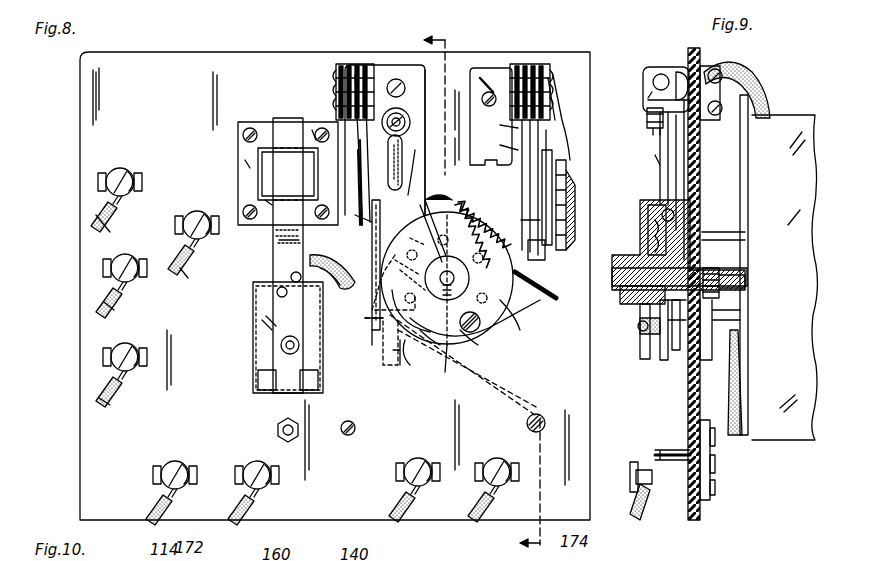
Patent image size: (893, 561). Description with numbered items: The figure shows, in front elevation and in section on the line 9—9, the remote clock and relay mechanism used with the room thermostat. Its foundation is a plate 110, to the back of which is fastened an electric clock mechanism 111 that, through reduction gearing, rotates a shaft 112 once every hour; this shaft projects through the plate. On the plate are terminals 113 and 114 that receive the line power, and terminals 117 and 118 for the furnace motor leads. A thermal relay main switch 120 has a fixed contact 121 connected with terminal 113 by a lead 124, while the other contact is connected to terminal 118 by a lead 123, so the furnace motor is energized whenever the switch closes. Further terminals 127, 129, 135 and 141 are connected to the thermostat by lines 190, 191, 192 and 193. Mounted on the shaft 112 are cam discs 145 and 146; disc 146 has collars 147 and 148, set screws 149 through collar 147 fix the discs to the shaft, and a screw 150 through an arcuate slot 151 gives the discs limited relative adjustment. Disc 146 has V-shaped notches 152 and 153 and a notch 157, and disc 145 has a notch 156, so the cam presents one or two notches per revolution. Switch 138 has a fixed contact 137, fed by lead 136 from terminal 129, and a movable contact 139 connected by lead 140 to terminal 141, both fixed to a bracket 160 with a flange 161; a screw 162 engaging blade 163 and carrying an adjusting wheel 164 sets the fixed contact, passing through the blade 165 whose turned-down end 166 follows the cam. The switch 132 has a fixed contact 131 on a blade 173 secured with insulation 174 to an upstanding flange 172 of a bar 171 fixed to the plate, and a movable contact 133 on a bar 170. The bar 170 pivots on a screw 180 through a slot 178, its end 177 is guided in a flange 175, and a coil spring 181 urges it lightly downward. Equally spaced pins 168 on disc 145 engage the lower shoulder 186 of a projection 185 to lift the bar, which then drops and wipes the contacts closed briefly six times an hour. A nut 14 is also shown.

In FIG. 8, the section line 9— 9 is at (482, 291).
In FIG. 8, the hex nut 14 is at (316, 430).
In FIG. 8, the plate 110 is at (92, 143).
In FIG. 9, the plate 110 is at (705, 518).
In FIG. 9, the electric clock mechanism 111 is at (784, 430).
In FIG. 8, the shaft 112 is at (522, 310).
In FIG. 9, the shaft 112 is at (606, 268).
In FIG. 8, the terminal 113 is at (175, 460).
In FIG. 8, the terminal 114 is at (250, 460).
In FIG. 8, the terminal 117 is at (418, 457).
In FIG. 8, the terminal 118 is at (494, 457).
In FIG. 9, the terminal 118 is at (640, 478).
In FIG. 8, the main switch 120 is at (284, 118).
In FIG. 8, the fixed contact 121 is at (280, 345).
In FIG. 8, the lead 123 is at (375, 230).
In FIG. 9, the lead 123 is at (755, 384).
In FIG. 8, the lead 124 is at (352, 300).
In FIG. 8, the terminal 127 is at (104, 274).
In FIG. 8, the terminal 129 is at (197, 210).
In FIG. 8, the fixed contact 131 is at (325, 185).
In FIG. 8, the switch 132 is at (363, 60).
In FIG. 8, the movable contact 133 is at (358, 262).
In FIG. 8, the terminal 135 is at (104, 363).
In FIG. 9, the lead 136 is at (766, 100).
In FIG. 8, the fixed contact 137 is at (552, 258).
In FIG. 8, the switch 138 is at (531, 62).
In FIG. 8, the movable contact 139 is at (561, 248).
In FIG. 8, the lead 140 is at (552, 62).
In FIG. 9, the lead 140 is at (730, 72).
In FIG. 8, the terminal 141 is at (102, 184).
In FIG. 8, the cam disc 145 is at (430, 232).
In FIG. 9, the cam disc 145 is at (662, 360).
In FIG. 8, the cam disc 146 is at (428, 342).
In FIG. 9, the cam disc 146 is at (638, 200).
In FIG. 8, the collar 147 is at (450, 372).
In FIG. 9, the collar 147 is at (628, 255).
In FIG. 9, the collar 148 is at (720, 310).
In FIG. 8, the set screws 149 is at (470, 342).
In FIG. 9, the set screws 149 is at (638, 320).
In FIG. 8, the screw 150 is at (480, 330).
In FIG. 9, the screw 150 is at (638, 330).
In FIG. 8, the arcuate slot 151 is at (412, 358).
In FIG. 9, the arcuate slot 151 is at (640, 352).
In FIG. 8, the V-shaped notch 152 is at (390, 292).
In FIG. 8, the V-shaped notch 153 is at (522, 322).
In FIG. 8, the notch 156 is at (520, 385).
In FIG. 8, the notch 157 is at (498, 145).
In FIG. 8, the bracket 160 is at (485, 65).
In FIG. 9, the flange 161 is at (632, 111).
In FIG. 8, the screw 162 is at (556, 165).
In FIG. 8, the blade 163 is at (498, 120).
In FIG. 9, the adjusting wheel 164 is at (646, 122).
In FIG. 8, the blade 165 is at (530, 160).
In FIG. 8, the turned-down end 166 is at (458, 262).
In FIG. 8, the pins 168 is at (388, 335).
In FIG. 9, the pins 168 is at (705, 245).
In FIG. 8, the bar 170 is at (410, 185).
In FIG. 9, the bar 170 is at (666, 150).
In FIG. 8, the bar 171 is at (402, 62).
In FIG. 9, the bar 171 is at (684, 70).
In FIG. 8, the flange 172 is at (392, 62).
In FIG. 9, the flange 172 is at (653, 70).
In FIG. 8, the fixed switch blade 173 is at (290, 193).
In FIG. 8, the insulation 174 is at (348, 62).
In FIG. 8, the flange 175 is at (372, 327).
In FIG. 8, the end 177 is at (395, 352).
In FIG. 9, the end 177 is at (666, 358).
In FIG. 8, the slot 178 is at (410, 124).
In FIG. 8, the screw 180 is at (404, 118).
In FIG. 9, the screw 180 is at (647, 118).
In FIG. 8, the coil spring 181 is at (545, 300).
In FIG. 9, the coil spring 181 is at (705, 215).
In FIG. 8, the projection 185 is at (404, 275).
In FIG. 8, the lower shoulder 186 is at (404, 246).
In FIG. 8, the line 190 is at (188, 280).
In FIG. 8, the line 191 is at (90, 225).
In FIG. 8, the line 192 is at (112, 312).
In FIG. 8, the line 193 is at (92, 402).